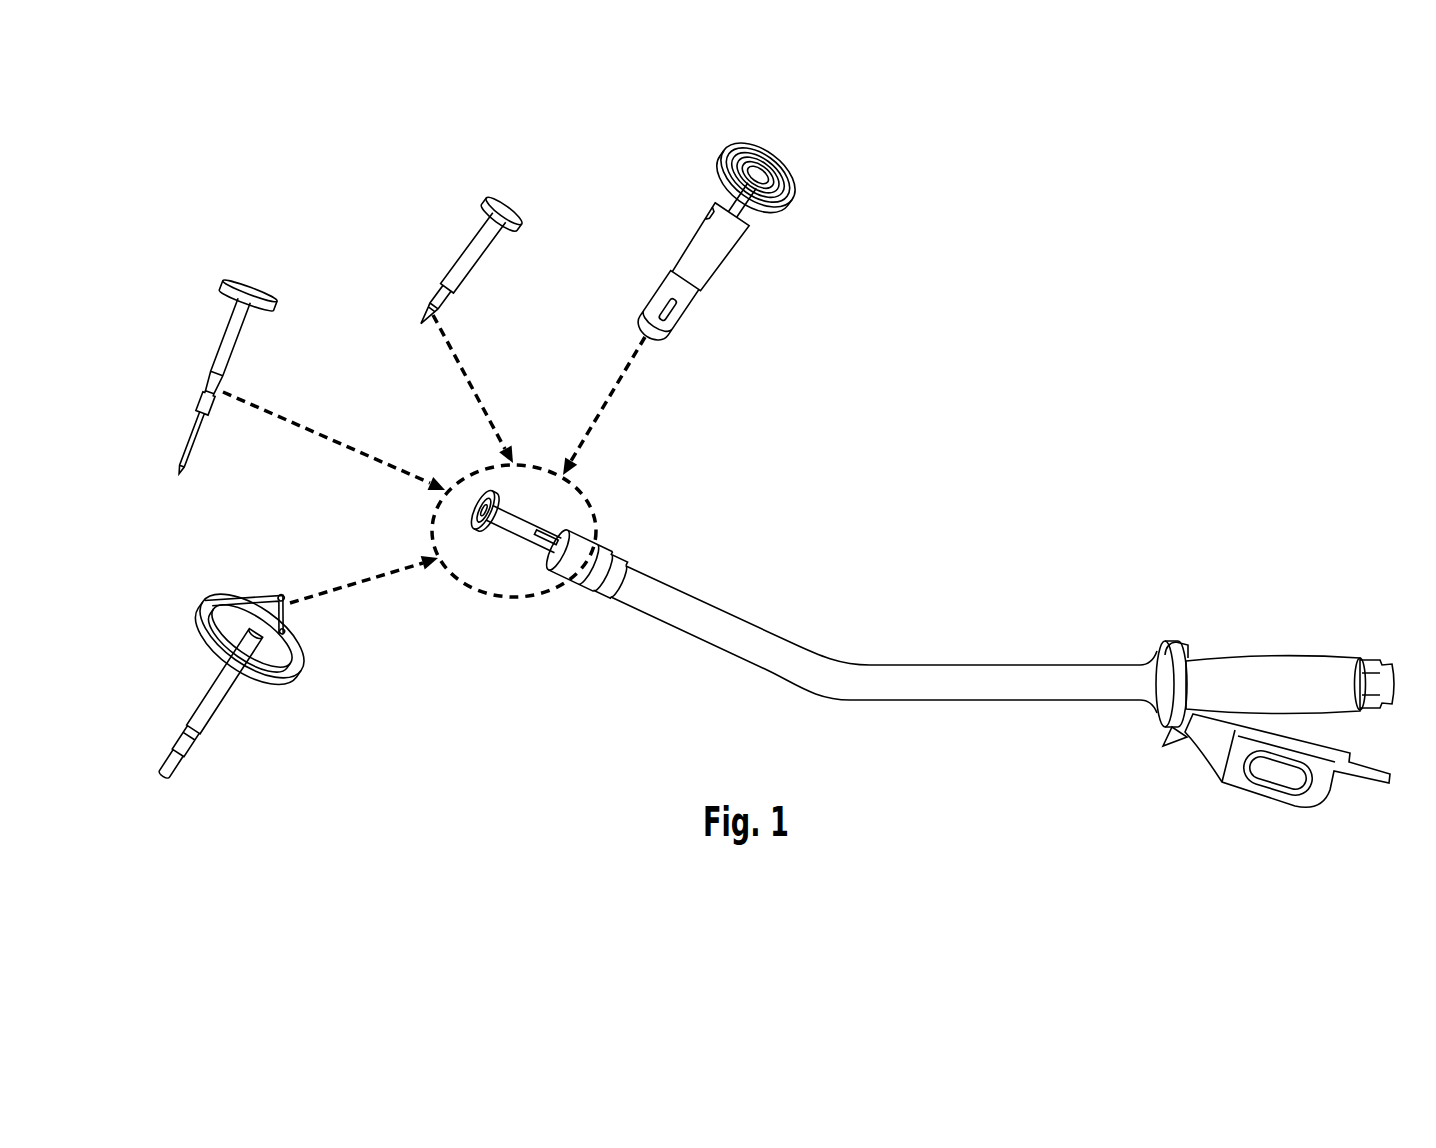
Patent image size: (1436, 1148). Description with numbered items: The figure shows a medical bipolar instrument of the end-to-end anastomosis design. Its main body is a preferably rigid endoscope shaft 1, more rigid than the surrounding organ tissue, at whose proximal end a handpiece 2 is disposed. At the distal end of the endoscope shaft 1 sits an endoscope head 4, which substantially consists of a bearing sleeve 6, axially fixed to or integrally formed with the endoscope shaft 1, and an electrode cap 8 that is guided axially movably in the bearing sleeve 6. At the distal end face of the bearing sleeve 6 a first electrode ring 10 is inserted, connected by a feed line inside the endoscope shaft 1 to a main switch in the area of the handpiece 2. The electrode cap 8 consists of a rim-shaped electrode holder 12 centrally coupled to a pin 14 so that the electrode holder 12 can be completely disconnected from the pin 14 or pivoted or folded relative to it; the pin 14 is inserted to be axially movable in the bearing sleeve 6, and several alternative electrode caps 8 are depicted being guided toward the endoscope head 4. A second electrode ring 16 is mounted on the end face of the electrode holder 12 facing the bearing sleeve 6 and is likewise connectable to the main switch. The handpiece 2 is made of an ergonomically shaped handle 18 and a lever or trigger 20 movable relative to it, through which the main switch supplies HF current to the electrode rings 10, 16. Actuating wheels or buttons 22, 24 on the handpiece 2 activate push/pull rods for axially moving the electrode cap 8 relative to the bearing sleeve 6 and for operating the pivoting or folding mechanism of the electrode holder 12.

The endoscope shaft 1 is at (853, 665).
The handpiece 2 is at (978, 680).
The endoscope head 4 is at (470, 598).
The bearing sleeve 6 is at (625, 565).
The electrode cap 8 is at (517, 476).
The first electrode ring 10 is at (556, 562).
The rim-shaped electrode holder 12 is at (531, 415).
The pin 14 is at (237, 328).
The second electrode ring 16 is at (783, 208).
The handle 18 is at (1273, 663).
The trigger 20 is at (1222, 783).
The actuating wheel or button 22 is at (1388, 682).
The actuating wheel or button 24 is at (1181, 650).